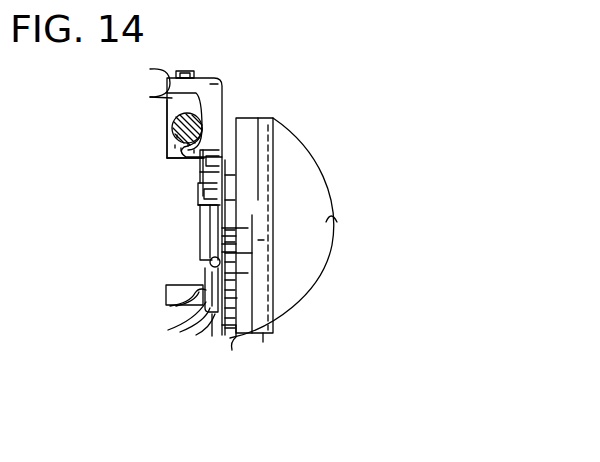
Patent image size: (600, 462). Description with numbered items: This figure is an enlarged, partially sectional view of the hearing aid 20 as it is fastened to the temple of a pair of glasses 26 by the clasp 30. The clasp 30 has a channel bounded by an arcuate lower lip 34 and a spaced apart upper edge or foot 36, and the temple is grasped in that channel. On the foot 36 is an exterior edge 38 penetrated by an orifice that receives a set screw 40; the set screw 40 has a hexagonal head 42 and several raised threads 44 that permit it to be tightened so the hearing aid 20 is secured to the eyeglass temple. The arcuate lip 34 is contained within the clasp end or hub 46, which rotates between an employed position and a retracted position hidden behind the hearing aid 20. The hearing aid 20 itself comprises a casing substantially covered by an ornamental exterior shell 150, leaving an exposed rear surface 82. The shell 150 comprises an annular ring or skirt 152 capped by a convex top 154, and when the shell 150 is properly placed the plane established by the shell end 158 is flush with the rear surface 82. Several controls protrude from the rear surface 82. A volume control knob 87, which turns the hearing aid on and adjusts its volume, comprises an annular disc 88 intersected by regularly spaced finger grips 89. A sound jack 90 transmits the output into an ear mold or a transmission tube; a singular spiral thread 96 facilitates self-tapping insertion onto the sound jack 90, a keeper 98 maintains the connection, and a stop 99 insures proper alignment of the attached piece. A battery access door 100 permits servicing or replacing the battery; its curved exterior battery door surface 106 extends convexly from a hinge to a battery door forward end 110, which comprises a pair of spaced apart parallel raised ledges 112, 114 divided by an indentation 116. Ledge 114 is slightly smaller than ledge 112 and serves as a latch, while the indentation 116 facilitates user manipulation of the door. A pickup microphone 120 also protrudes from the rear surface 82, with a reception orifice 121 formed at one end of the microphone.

The hearing aid 20 is at (383, 104).
The glasses 26 is at (181, 126).
The clasp 30 is at (232, 86).
The arcuate lower lip 34 is at (170, 131).
The upper edge or foot 36 is at (173, 100).
The exterior edge 38 is at (161, 77).
The set screw 40 is at (201, 62).
The hexagonal head 42 is at (185, 71).
The raised threads 44 is at (226, 82).
The clasp end or hub 46 is at (200, 166).
The rear surface 82 is at (212, 338).
The volume control knob 87 is at (221, 151).
The annular disc 88 is at (212, 185).
The finger grips 89 is at (207, 173).
The sound jack 90 is at (163, 295).
The spiral thread 96 is at (172, 318).
The keeper 98 is at (190, 322).
The stop 99 is at (208, 338).
The battery access door 100 is at (200, 229).
The exterior battery door surface 106 is at (200, 198).
The battery door forward end 110 is at (224, 229).
The ledge 112 is at (224, 253).
The ledge 114 is at (224, 245).
The indentation 116 is at (224, 237).
The pickup microphone 120 is at (200, 330).
The reception orifice 121 is at (209, 262).
The ornamental exterior shell 150 is at (348, 186).
The annular ring or skirt 152 is at (263, 344).
The convex top 154 is at (332, 219).
The shell end 158 is at (232, 344).